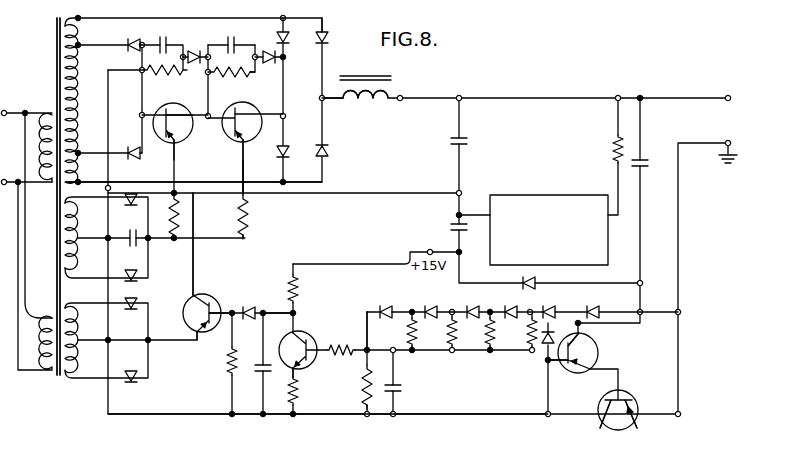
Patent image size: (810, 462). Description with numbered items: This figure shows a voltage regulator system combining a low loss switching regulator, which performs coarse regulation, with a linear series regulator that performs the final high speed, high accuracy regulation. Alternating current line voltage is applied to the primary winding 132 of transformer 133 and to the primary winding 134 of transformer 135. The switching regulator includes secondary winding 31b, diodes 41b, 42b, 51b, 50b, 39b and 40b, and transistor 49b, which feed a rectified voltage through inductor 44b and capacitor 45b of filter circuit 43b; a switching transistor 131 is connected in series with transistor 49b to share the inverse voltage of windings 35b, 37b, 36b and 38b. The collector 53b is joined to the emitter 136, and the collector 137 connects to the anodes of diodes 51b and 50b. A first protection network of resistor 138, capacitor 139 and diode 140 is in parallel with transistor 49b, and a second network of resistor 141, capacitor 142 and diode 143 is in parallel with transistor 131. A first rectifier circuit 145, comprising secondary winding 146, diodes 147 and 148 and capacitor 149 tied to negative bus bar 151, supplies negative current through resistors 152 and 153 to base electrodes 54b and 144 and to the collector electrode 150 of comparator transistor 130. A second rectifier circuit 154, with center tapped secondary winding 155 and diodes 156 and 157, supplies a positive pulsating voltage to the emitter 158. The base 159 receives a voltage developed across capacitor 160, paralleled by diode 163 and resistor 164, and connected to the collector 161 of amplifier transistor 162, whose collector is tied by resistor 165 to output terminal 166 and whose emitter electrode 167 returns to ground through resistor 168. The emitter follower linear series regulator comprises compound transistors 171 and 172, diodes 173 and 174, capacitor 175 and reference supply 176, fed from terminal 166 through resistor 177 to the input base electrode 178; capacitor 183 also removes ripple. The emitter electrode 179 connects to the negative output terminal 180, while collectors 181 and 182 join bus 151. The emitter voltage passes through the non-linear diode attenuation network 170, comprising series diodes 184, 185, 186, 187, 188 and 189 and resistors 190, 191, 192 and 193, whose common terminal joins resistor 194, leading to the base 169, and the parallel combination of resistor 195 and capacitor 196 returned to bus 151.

The transformer 133 is at (70, 15).
The winding 35b is at (78, 17).
The winding 37b is at (80, 42).
The secondary winding 31b is at (81, 78).
The winding 38b is at (80, 150).
The winding 36b is at (194, 188).
The primary winding 132 is at (45, 115).
The primary winding 134 is at (48, 370).
The transformer 135 is at (63, 298).
The diode 41b is at (131, 40).
The diode 42b is at (148, 156).
The capacitor 139 is at (164, 37).
The diode 140 is at (195, 52).
The resistor 138 is at (150, 72).
The capacitor 142 is at (231, 36).
The diode 143 is at (268, 52).
The resistor 141 is at (250, 73).
The diode 51b is at (285, 44).
The diode 39b is at (327, 40).
The diode 50b is at (286, 156).
The diode 40b is at (328, 156).
The transistor 49b is at (191, 97).
The collector 53b is at (182, 130).
The base electrode 54b is at (174, 148).
The emitter 136 is at (234, 110).
The collector 137 is at (252, 110).
The base electrode 144 is at (239, 148).
The switching transistor 131 is at (266, 160).
The inductor 44b is at (394, 90).
The filter circuit 43b is at (391, 133).
The capacitor 45b is at (463, 142).
The output terminal 166 is at (744, 98).
The negative output terminal 180 is at (742, 149).
The capacitor 175 is at (648, 167).
The resistor 177 is at (612, 152).
The reference supply 176 is at (570, 195).
The capacitor 183 is at (451, 226).
The diode 174 is at (520, 283).
The first rectifier circuit 145 is at (182, 274).
The secondary winding 146 is at (79, 236).
The diode 147 is at (129, 186).
The capacitor 149 is at (130, 230).
The diode 148 is at (130, 267).
The resistor 152 is at (180, 222).
The resistor 153 is at (246, 222).
The center tapped secondary winding 155 is at (81, 346).
The diode 156 is at (127, 311).
The diode 157 is at (127, 368).
The second rectifier circuit 154 is at (170, 403).
The comparator transistor 130 is at (227, 281).
The collector electrode 150 is at (190, 304).
The base 159 is at (216, 307).
The emitter 158 is at (210, 346).
The diode 163 is at (251, 306).
The resistor 164 is at (228, 360).
The capacitor 160 is at (264, 373).
The resistor 165 is at (295, 285).
The amplifier transistor 162 is at (325, 320).
The collector 161 is at (296, 344).
The base 169 is at (316, 344).
The resistor 194 is at (353, 335).
The emitter electrode 167 is at (310, 366).
The resistor 168 is at (298, 393).
The resistor 195 is at (364, 388).
The capacitor 196 is at (403, 388).
The negative bus bar 151 is at (309, 414).
The diode 189 is at (396, 303).
The diode 188 is at (442, 303).
The diode 187 is at (480, 300).
The diode 186 is at (520, 303).
The non-linear diode attenuation network 170 is at (562, 302).
The diode 185 is at (585, 306).
The diode 184 is at (598, 308).
The resistor 193 is at (406, 336).
The resistor 192 is at (447, 338).
The resistor 191 is at (486, 336).
The resistor 190 is at (528, 336).
The diode 173 is at (545, 350).
The input base electrode 178 is at (595, 346).
The collector 181 is at (563, 378).
The transistor 171 is at (604, 392).
The transistor 172 is at (668, 400).
The collector 182 is at (602, 424).
The emitter electrode 179 is at (633, 428).